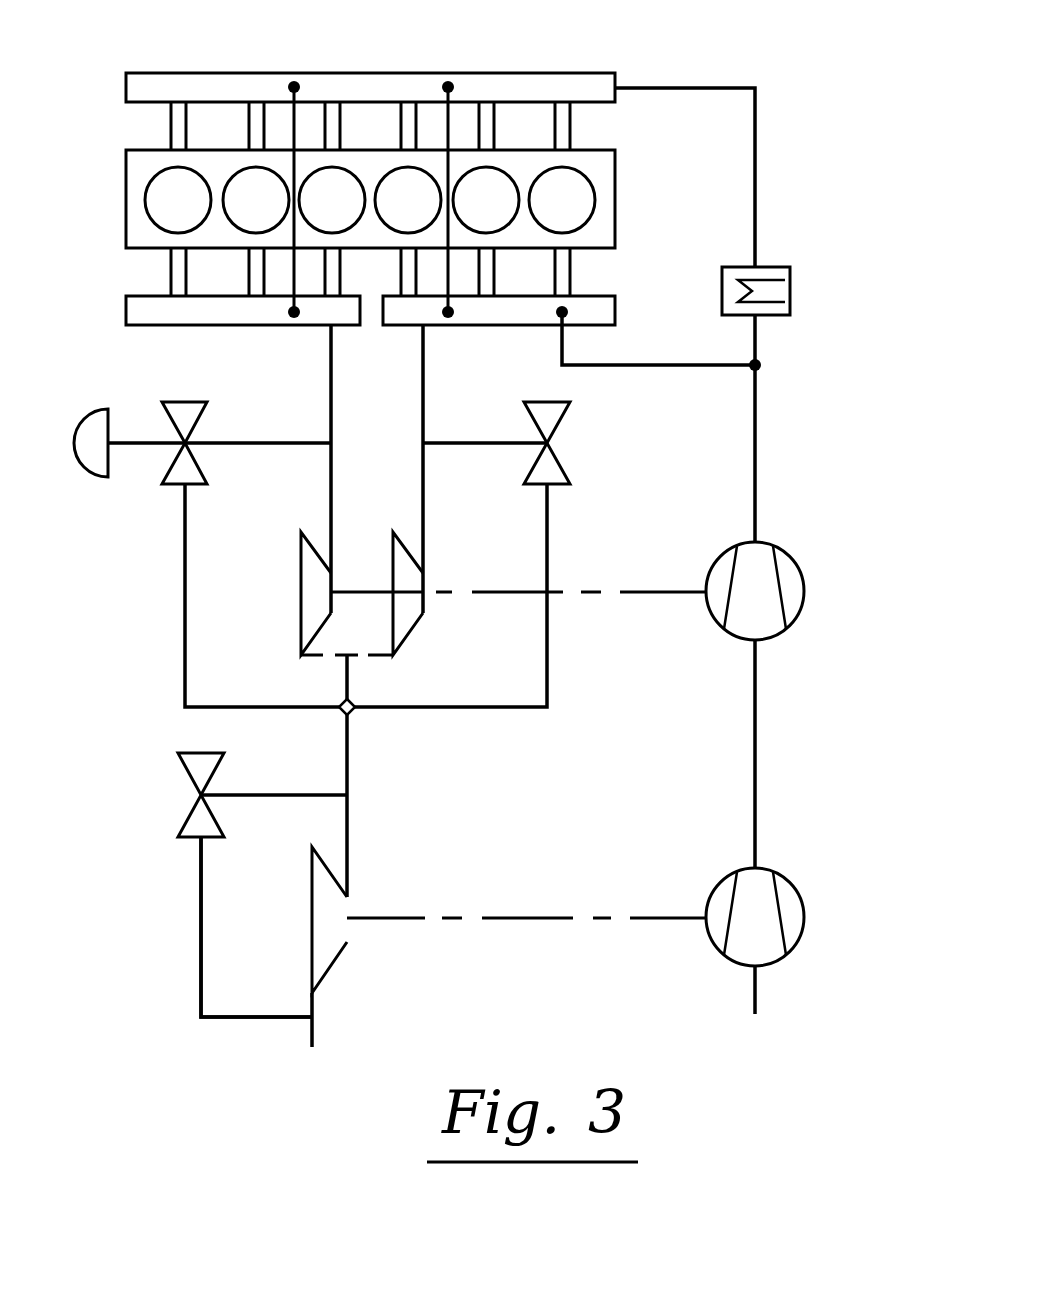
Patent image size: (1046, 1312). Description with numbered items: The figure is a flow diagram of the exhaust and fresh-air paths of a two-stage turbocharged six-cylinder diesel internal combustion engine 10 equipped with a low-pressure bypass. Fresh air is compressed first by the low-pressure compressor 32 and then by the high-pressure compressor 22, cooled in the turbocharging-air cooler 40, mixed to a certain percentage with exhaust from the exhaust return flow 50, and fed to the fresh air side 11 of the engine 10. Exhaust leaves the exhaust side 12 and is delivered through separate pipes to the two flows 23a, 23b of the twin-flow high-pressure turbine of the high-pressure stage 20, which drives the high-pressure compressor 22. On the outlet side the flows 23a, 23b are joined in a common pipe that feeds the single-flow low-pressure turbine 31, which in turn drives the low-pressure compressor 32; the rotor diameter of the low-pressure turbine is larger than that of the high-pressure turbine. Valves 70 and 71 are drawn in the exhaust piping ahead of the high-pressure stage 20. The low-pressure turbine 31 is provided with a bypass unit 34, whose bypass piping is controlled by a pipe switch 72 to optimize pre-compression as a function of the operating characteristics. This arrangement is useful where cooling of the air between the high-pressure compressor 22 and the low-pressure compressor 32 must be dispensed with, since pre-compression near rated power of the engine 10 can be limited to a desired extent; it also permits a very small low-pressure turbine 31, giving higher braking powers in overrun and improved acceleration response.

The internal combustion engine 10 is at (640, 60).
The fresh air side 11 is at (538, 78).
The exhaust side 12 is at (610, 303).
The exhaust return flow 50 is at (450, 281).
The turbocharging-air cooler 40 is at (782, 290).
The valve 70 is at (178, 402).
The valve 71 is at (560, 413).
The pipe switch 72 is at (188, 825).
The high-pressure stage 20 is at (472, 611).
The high-pressure compressor 22 is at (795, 578).
The flow of the twin-flow high-pressure turbine 23a is at (307, 613).
The flow of the twin-flow high-pressure turbine 23b is at (408, 625).
The low-pressure turbine 31 is at (347, 943).
The low-pressure compressor 32 is at (803, 913).
The bypass unit 34 is at (202, 920).